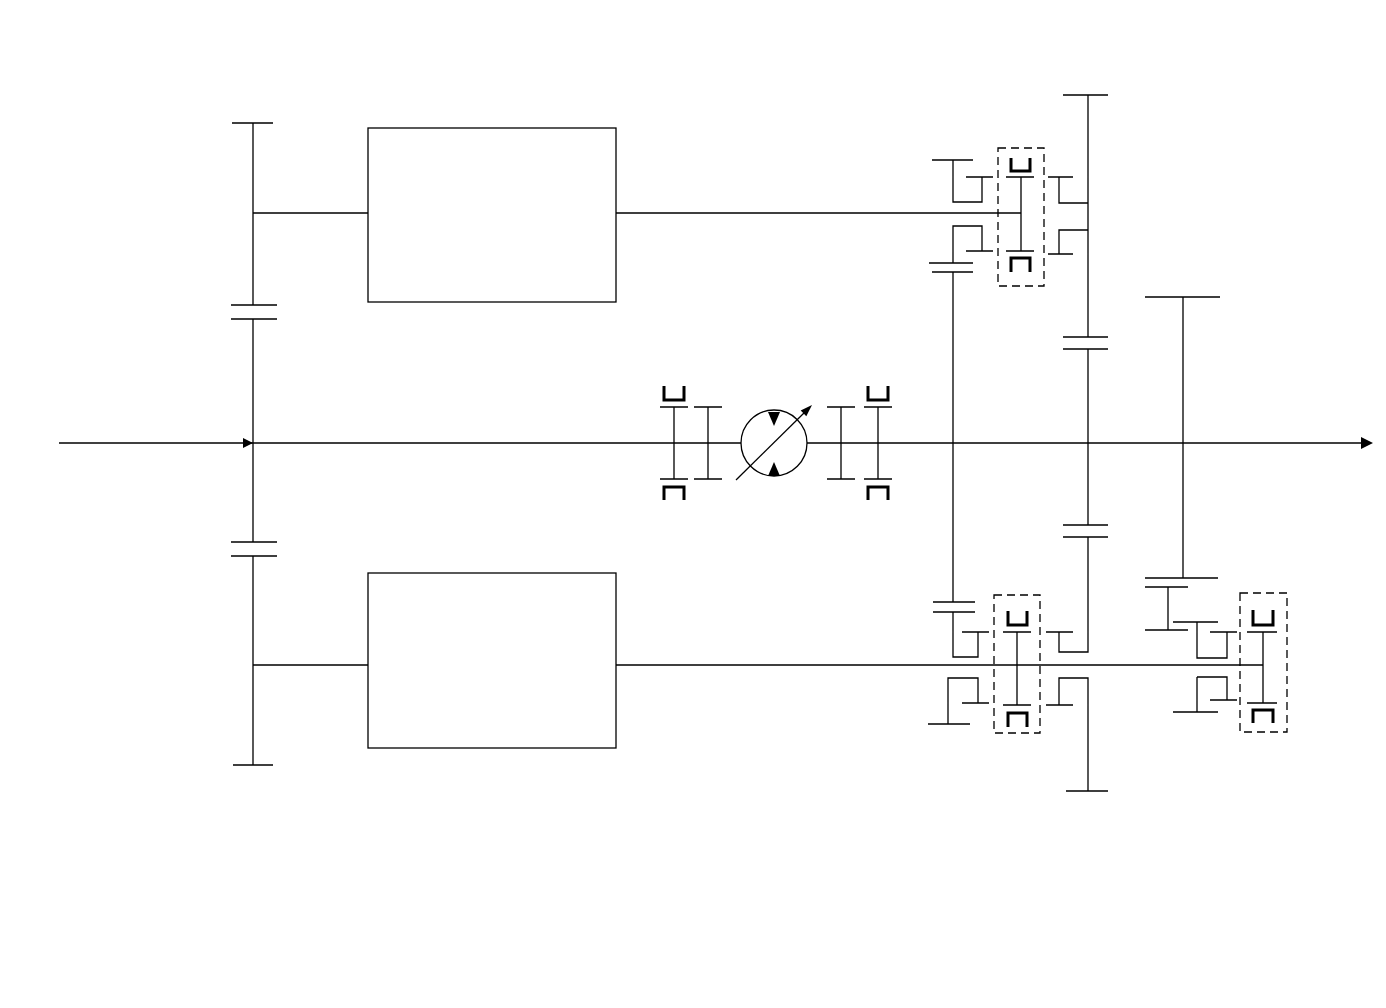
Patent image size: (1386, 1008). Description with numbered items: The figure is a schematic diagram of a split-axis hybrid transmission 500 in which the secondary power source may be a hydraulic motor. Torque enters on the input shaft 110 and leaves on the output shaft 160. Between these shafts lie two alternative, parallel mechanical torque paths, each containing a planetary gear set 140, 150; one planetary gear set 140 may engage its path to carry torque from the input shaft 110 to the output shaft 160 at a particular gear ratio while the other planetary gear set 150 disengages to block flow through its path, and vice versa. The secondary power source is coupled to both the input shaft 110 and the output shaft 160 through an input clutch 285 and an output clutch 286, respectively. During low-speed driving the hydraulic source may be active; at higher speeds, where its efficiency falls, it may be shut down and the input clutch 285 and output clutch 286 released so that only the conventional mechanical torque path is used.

The hybrid transmission 500 is at (122, 93).
The input shaft 110 is at (156, 431).
The planetary gear set 140 is at (492, 215).
The planetary gear set 150 is at (492, 660).
The input clutch 285 is at (681, 467).
The output clutch 286 is at (863, 467).
The output shaft 160 is at (1230, 432).